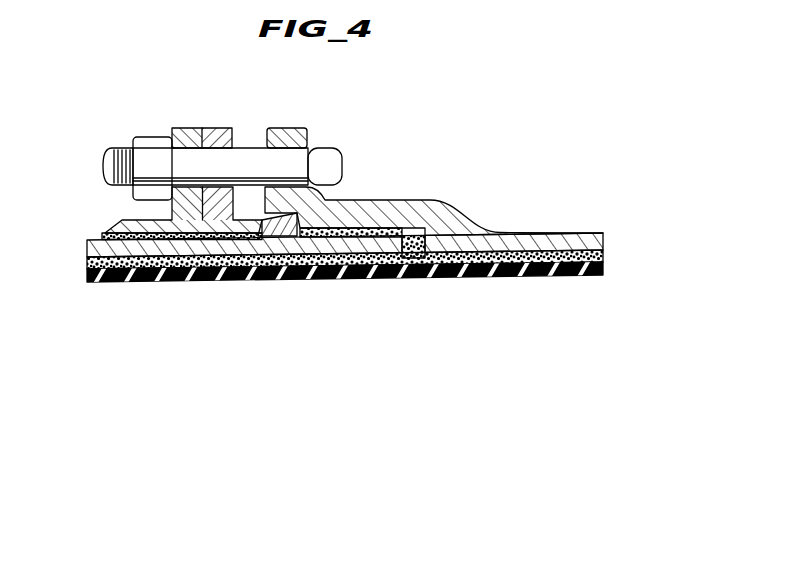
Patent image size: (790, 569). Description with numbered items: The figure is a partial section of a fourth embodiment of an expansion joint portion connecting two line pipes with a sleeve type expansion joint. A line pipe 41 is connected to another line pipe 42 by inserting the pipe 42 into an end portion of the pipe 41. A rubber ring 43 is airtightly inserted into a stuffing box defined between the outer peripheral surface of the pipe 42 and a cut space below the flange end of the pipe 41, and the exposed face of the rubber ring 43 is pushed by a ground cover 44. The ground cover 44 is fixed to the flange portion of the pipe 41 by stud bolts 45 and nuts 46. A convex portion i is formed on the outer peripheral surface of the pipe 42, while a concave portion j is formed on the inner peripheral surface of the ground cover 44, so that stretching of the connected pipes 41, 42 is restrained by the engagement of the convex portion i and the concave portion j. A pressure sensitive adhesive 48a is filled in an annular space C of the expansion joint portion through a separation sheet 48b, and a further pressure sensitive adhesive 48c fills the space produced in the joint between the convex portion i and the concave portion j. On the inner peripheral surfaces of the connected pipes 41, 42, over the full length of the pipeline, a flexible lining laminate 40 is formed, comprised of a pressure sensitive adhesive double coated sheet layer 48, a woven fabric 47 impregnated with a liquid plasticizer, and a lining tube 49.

The flexible lining laminate 40 is at (618, 256).
The line pipe 41 is at (497, 228).
The line pipe 42 is at (87, 248).
The rubber ring 43 is at (285, 237).
The ground cover 44 is at (124, 221).
The stud bolt 45 is at (245, 160).
The nut 46 is at (152, 137).
The woven fabric 47 is at (557, 252).
The pressure sensitive adhesive double coated sheet layer 48 is at (260, 237).
The pressure sensitive adhesive 48a is at (398, 212).
The separation sheet 48b is at (408, 230).
The pressure sensitive adhesive 48c is at (103, 235).
The lining tube 49 is at (540, 272).
The annular space C is at (402, 277).
The convex portion i is at (188, 236).
The concave portion j is at (140, 240).